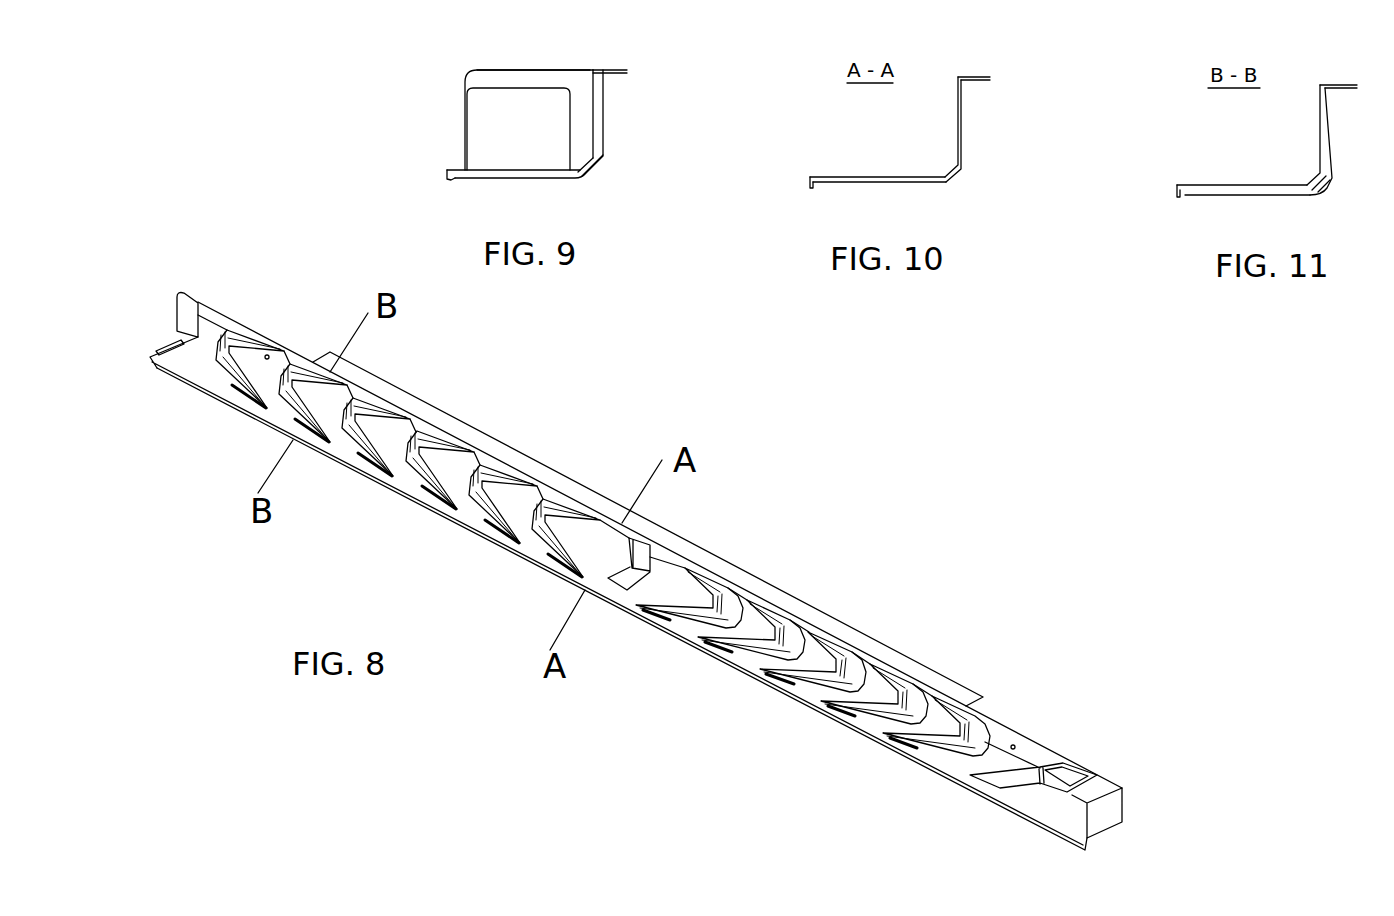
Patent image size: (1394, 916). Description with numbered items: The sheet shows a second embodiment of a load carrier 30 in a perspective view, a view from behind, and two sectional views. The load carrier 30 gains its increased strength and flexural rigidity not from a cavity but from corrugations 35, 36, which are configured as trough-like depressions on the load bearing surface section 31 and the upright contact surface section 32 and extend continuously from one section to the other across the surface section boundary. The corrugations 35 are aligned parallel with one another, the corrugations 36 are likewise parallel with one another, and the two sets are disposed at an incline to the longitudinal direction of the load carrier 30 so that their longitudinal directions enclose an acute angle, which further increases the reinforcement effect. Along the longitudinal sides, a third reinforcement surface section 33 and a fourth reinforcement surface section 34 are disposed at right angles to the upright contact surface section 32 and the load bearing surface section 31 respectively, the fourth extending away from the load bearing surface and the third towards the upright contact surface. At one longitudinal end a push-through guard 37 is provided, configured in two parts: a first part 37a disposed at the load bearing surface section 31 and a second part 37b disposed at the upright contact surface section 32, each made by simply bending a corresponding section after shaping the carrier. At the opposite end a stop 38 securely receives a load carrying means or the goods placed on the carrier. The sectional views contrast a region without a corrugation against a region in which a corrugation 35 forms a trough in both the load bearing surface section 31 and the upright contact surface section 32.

In FIG. 8, the load carrier 30 is at (743, 540).
In FIG. 8, the load bearing surface section 31 is at (1048, 822).
In FIG. 9, the load bearing surface section 31 is at (523, 178).
In FIG. 10, the load bearing surface section 31 is at (887, 180).
In FIG. 11, the load bearing surface section 31 is at (1252, 187).
In FIG. 9, the upright contact surface section 32 is at (605, 115).
In FIG. 10, the upright contact surface section 32 is at (960, 120).
In FIG. 11, the upright contact surface section 32 is at (1320, 104).
In FIG. 8, the third reinforcement surface section 33 is at (860, 628).
In FIG. 9, the third reinforcement surface section 33 is at (613, 70).
In FIG. 10, the third reinforcement surface section 33 is at (978, 77).
In FIG. 11, the third reinforcement surface section 33 is at (1342, 83).
In FIG. 8, the fourth reinforcement surface section 34 is at (226, 405).
In FIG. 9, the fourth reinforcement surface section 34 is at (448, 173).
In FIG. 10, the fourth reinforcement surface section 34 is at (808, 185).
In FIG. 11, the fourth reinforcement surface section 34 is at (1175, 190).
In FIG. 8, the corrugation 35 is at (495, 518).
In FIG. 11, the corrugation 35 is at (1333, 184).
In FIG. 8, the corrugation 36 is at (937, 747).
In FIG. 9, the corrugation 36 is at (595, 173).
In FIG. 8, the push-through guard 37 is at (1108, 815).
In FIG. 9, the push-through guard 37 is at (467, 81).
In FIG. 9, the first part 37a is at (498, 113).
In FIG. 9, the second part 37b is at (565, 75).
In FIG. 8, the stop 38 is at (178, 333).